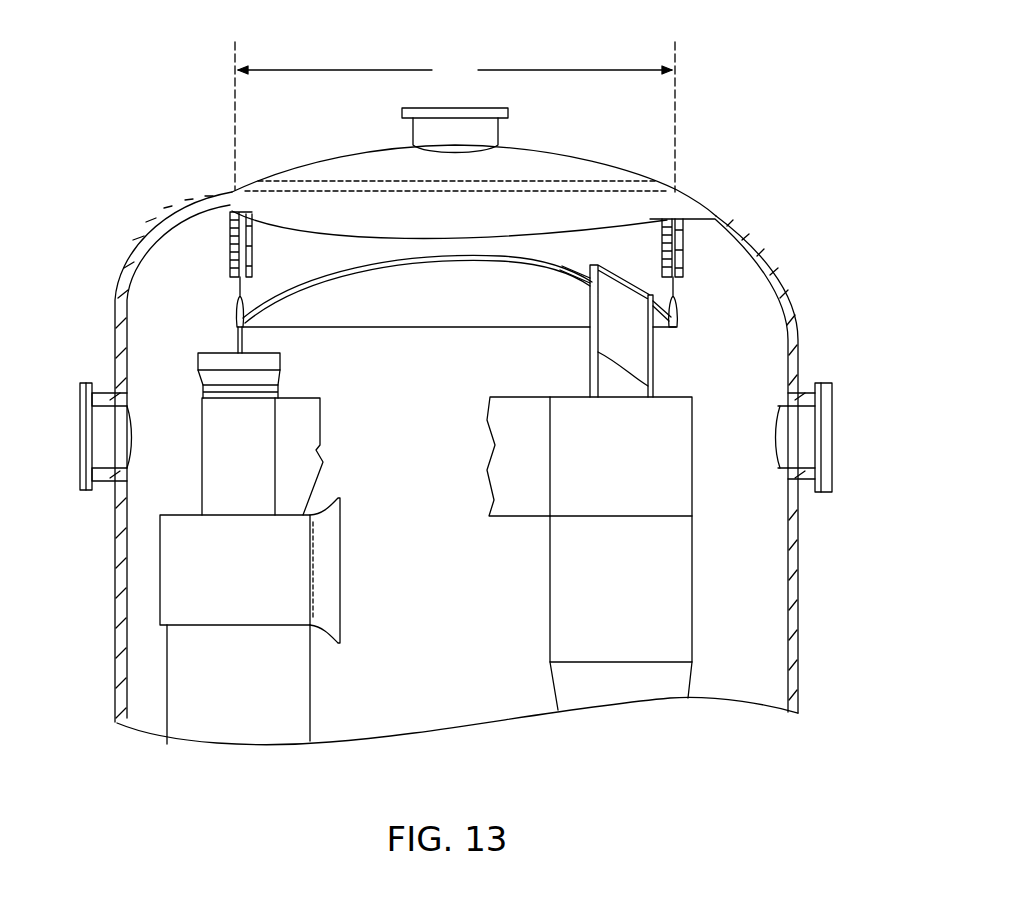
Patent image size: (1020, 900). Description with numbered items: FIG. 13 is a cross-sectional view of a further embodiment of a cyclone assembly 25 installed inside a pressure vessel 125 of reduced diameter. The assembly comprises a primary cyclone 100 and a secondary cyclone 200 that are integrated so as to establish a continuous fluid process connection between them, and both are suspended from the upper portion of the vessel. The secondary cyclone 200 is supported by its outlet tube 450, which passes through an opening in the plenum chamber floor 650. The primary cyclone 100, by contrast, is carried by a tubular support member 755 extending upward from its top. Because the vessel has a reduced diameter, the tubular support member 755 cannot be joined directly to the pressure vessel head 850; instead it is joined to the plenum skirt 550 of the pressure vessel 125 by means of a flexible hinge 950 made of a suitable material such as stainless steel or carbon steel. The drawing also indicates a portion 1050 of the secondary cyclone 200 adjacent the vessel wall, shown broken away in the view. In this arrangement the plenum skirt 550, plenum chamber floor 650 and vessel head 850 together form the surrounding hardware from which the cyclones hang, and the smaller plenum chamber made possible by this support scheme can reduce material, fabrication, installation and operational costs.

The cyclone assembly 25 is at (204, 70).
The pressure vessel 125 is at (105, 636).
The pressure vessel head 850 is at (538, 158).
The outlet tube 450 is at (620, 272).
The plenum chamber floor 650 is at (364, 267).
The plenum skirt 550 is at (236, 305).
The flexible hinge 950 is at (234, 345).
The tubular support member 755 is at (192, 383).
The primary cyclone 100 is at (222, 724).
The secondary cyclone 200 is at (673, 607).
The module portion 1050 is at (530, 494).